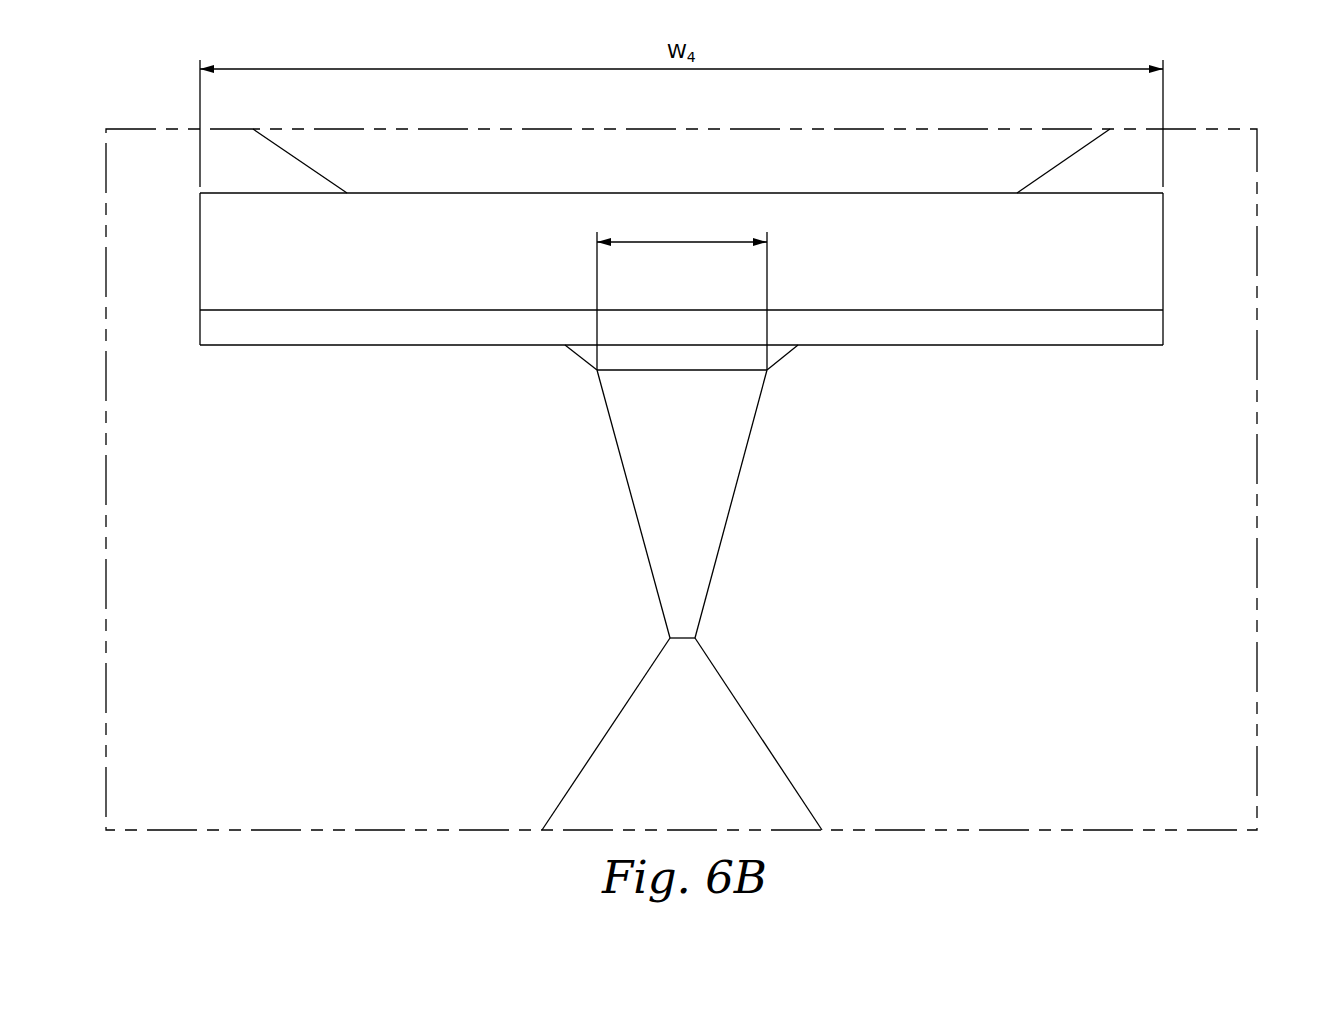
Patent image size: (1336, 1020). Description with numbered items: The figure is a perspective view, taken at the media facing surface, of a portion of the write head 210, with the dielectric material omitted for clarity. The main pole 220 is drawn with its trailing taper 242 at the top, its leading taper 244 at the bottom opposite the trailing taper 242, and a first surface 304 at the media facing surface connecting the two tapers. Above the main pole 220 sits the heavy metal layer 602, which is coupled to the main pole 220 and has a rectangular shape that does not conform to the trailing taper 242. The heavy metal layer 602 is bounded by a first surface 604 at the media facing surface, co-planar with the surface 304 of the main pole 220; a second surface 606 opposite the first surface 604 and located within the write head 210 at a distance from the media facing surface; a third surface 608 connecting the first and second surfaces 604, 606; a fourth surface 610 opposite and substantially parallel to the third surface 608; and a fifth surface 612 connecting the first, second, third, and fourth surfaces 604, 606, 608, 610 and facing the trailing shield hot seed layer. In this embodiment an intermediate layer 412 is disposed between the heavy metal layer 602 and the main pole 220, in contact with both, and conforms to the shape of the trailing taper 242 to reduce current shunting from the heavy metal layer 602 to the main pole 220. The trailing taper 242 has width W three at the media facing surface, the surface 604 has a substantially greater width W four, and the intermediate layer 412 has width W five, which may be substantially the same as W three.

The write head 210 is at (1206, 86).
The trailing taper 242 is at (702, 172).
The second surface 606 is at (817, 193).
The third surface 608 is at (200, 284).
The fourth surface 610 is at (1163, 284).
The first surface 604 is at (407, 333).
The fifth surface 612 is at (702, 287).
The intermediate layer 412 is at (668, 360).
The first surface 304 is at (702, 496).
The main pole 220 is at (690, 540).
The leading taper 244 is at (702, 783).
The heavy metal layer 602 is at (946, 429).